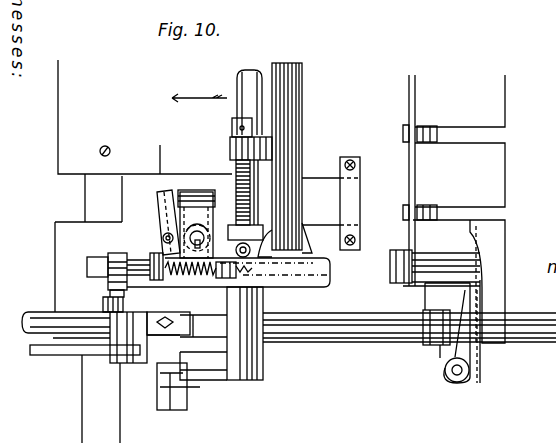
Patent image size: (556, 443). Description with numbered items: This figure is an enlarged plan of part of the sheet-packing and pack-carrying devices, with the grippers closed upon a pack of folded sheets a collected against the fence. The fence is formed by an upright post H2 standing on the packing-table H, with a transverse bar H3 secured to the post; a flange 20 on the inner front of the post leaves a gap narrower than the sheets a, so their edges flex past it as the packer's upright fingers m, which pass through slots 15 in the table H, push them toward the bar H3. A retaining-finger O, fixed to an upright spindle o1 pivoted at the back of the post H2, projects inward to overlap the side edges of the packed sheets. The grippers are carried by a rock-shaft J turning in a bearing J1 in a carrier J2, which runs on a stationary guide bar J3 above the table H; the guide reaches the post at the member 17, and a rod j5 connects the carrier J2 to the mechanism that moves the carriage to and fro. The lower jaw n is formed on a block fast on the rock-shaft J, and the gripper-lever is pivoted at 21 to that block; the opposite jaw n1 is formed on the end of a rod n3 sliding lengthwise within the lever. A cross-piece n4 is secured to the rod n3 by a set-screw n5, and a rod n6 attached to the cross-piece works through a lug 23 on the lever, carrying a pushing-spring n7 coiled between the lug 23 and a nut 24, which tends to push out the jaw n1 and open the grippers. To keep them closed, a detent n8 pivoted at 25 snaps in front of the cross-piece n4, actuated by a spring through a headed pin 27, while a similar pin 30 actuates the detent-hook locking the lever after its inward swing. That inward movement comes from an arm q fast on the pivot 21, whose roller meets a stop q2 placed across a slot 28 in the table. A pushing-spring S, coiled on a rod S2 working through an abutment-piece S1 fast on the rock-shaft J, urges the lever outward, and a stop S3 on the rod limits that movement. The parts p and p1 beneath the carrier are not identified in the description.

The folded sheets a is at (288, 127).
The pushing-spring S is at (232, 178).
The abutment-piece S1 is at (233, 152).
The rod S2 is at (241, 115).
The stop S3 is at (240, 127).
The arm q is at (193, 190).
The stop q2 is at (367, 211).
The pin 30 is at (210, 218).
The pivot 21 is at (193, 237).
The headed pin 27 is at (175, 203).
The pivot 25 is at (166, 238).
The slot 28 is at (315, 182).
The jaw n1 is at (300, 228).
The rock-shaft J is at (228, 279).
The detent n8 is at (133, 257).
The rod n3 is at (90, 267).
The lower jaw n is at (161, 278).
The pushing-spring n7 is at (202, 273).
The rod n6 is at (250, 273).
The cross-piece n4 is at (107, 282).
The set-screw n5 is at (94, 300).
The lug 23 is at (145, 294).
The rod j5 is at (73, 355).
The carrier J2 is at (187, 323).
The bearing J1 is at (245, 333).
The guide J3 is at (323, 330).
The hub 17 is at (435, 323).
The block p is at (170, 408).
The bracket p1 is at (213, 380).
The nut 24 is at (315, 434).
The transverse bar H3 is at (427, 180).
The packing-table H is at (426, 141).
The slots 15 is at (503, 132).
The upright fingers m is at (425, 138).
The flange 20 is at (477, 240).
The post H2 is at (477, 343).
The retaining-finger O is at (472, 307).
The spindle o1 is at (455, 372).